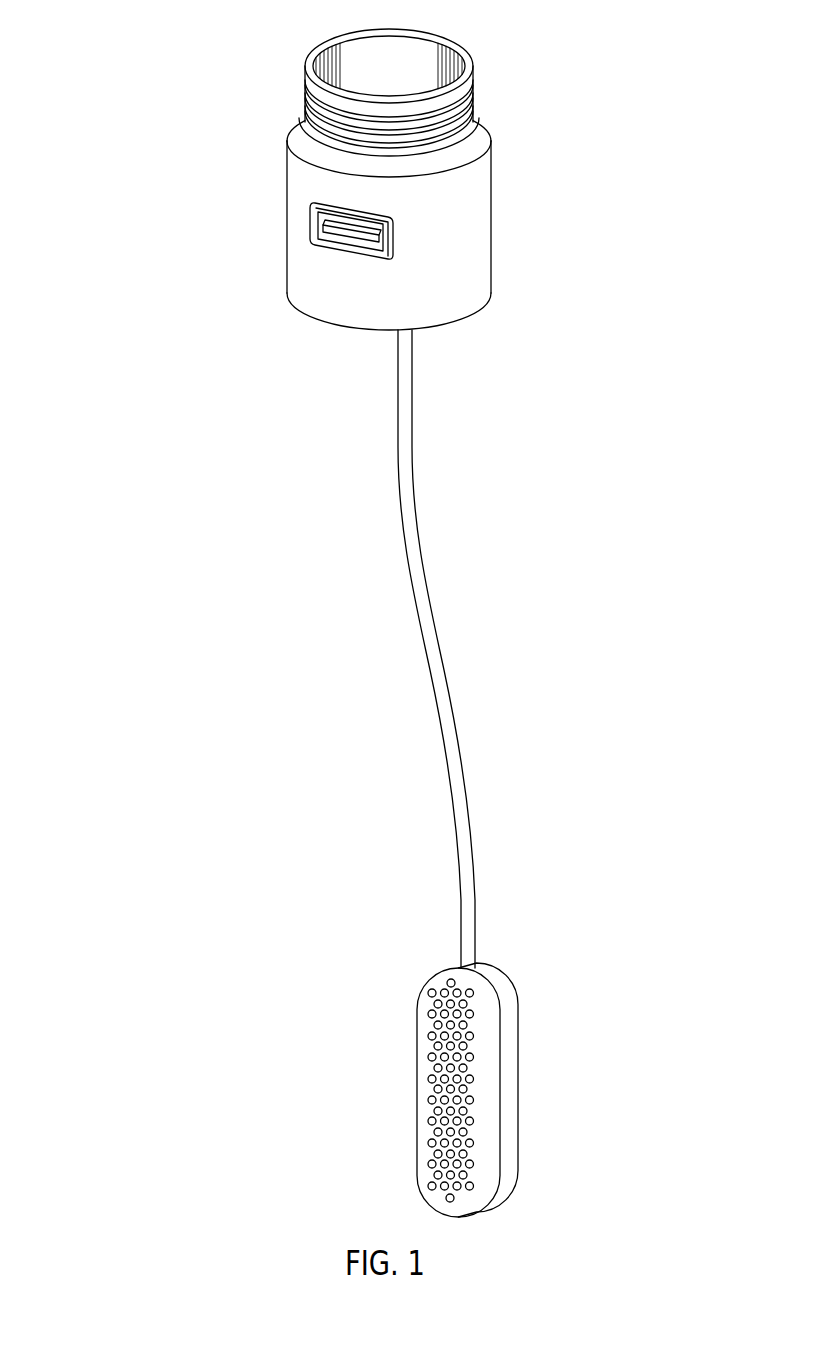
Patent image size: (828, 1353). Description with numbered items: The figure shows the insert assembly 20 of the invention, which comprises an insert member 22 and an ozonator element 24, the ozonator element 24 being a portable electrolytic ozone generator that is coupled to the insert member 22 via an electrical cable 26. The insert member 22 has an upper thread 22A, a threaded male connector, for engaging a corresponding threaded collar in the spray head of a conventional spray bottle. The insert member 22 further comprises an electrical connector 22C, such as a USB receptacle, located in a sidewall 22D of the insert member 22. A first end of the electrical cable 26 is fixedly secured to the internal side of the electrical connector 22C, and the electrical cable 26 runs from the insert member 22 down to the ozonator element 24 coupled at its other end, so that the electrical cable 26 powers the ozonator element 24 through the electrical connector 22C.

The insert assembly 20 is at (102, 480).
The insert member 22 is at (548, 190).
The upper thread 22A is at (473, 95).
The electrical connector 22C is at (317, 232).
The sidewall 22D is at (467, 250).
The electrical cable 26 is at (443, 707).
The ozonator element 24 is at (545, 1041).